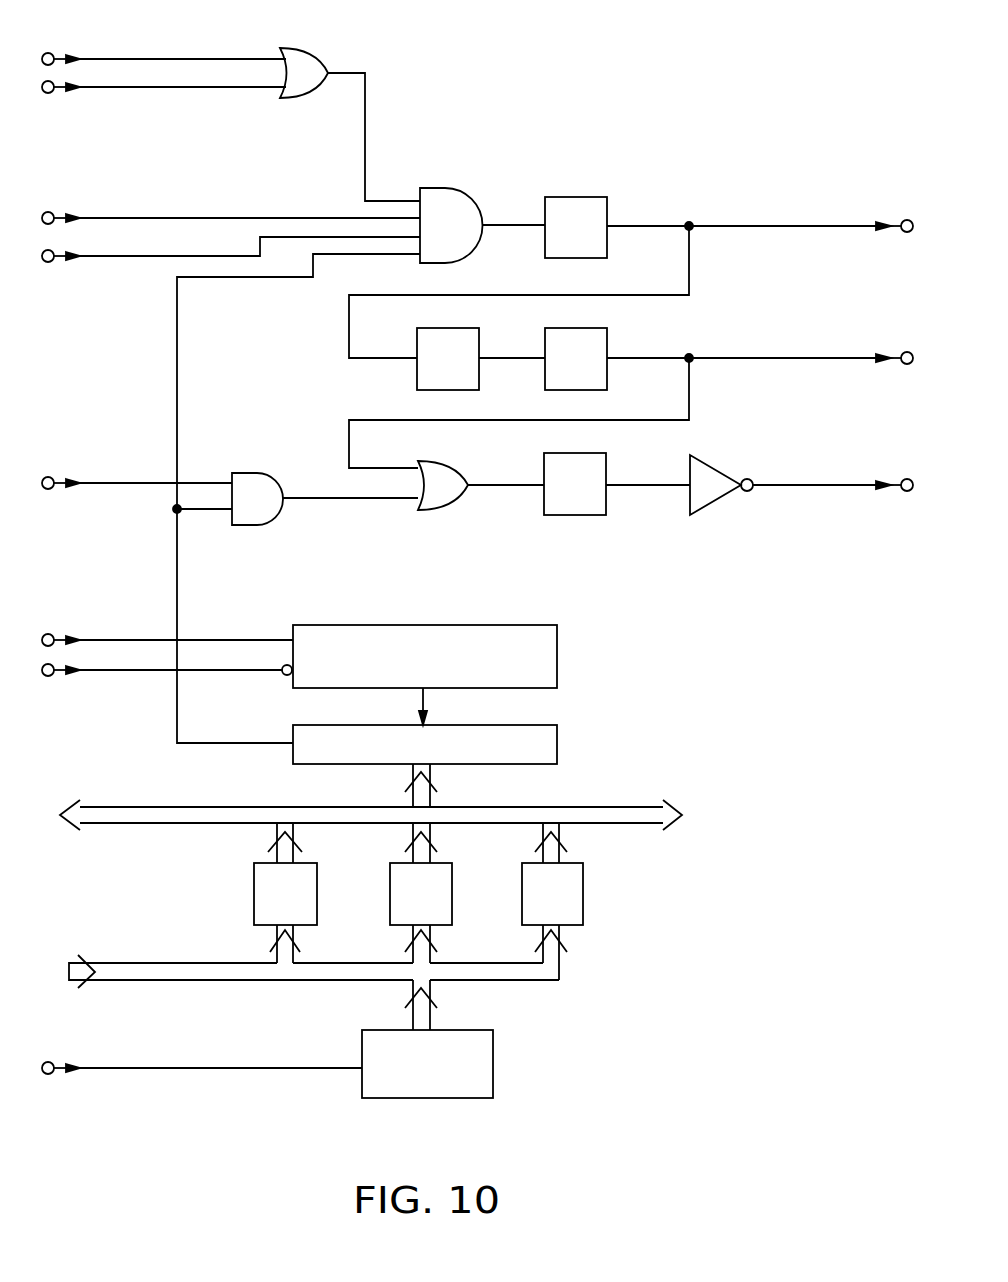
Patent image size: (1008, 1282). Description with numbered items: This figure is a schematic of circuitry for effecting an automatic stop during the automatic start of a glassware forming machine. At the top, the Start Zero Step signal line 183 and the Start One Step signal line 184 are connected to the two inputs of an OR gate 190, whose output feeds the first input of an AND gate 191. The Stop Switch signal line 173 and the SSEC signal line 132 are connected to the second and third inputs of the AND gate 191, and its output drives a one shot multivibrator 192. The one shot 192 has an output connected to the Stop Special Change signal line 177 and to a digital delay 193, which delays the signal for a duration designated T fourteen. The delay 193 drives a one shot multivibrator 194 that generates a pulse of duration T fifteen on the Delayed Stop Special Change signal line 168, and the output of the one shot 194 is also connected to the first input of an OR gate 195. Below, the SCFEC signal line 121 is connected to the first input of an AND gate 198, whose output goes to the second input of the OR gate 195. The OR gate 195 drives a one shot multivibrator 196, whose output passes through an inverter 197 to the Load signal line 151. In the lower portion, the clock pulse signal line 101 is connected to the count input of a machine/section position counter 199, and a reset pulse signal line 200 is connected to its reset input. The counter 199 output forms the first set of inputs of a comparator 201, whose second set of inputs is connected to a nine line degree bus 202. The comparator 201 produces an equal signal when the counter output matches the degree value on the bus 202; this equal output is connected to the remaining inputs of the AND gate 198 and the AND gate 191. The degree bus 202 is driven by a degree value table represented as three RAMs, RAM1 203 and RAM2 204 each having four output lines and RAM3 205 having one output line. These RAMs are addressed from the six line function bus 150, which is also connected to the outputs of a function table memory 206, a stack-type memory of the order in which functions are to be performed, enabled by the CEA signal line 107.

The Start Zero Step signal line 183 is at (138, 59).
The Start One Step signal line 184 is at (92, 87).
The OR gate 190 is at (312, 60).
The Stop Switch signal line 173 is at (137, 218).
The SSEC signal line 132 is at (236, 259).
The AND gate 191 is at (458, 205).
The one shot multivibrator 192 is at (590, 200).
The Stop Special Change signal line 177 is at (818, 226).
The digital delay 193 is at (462, 336).
The one shot multivibrator 194 is at (595, 336).
The Delayed Stop Special Change signal line 168 is at (794, 358).
The SCFEC signal line 121 is at (129, 483).
The AND gate 198 is at (256, 482).
The OR gate 195 is at (435, 471).
The one shot multivibrator 196 is at (594, 471).
The inverter 197 is at (700, 475).
The Load signal line 151 is at (824, 485).
The clock pulse signal line 101 is at (138, 640).
The reset pulse signal line 200 is at (86, 671).
The machine/section position counter 199 is at (540, 634).
The comparator 201 is at (540, 728).
The degree bus 202 is at (323, 810).
The RAM1 203 is at (311, 893).
The RAM2 204 is at (446, 893).
The RAM3 205 is at (584, 893).
The function bus 150 is at (169, 971).
The CEA signal line 107 is at (153, 1068).
The function table memory 206 is at (482, 1061).